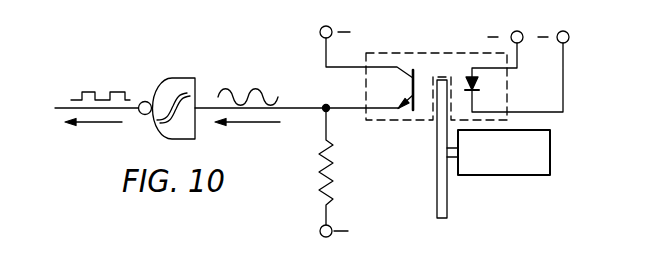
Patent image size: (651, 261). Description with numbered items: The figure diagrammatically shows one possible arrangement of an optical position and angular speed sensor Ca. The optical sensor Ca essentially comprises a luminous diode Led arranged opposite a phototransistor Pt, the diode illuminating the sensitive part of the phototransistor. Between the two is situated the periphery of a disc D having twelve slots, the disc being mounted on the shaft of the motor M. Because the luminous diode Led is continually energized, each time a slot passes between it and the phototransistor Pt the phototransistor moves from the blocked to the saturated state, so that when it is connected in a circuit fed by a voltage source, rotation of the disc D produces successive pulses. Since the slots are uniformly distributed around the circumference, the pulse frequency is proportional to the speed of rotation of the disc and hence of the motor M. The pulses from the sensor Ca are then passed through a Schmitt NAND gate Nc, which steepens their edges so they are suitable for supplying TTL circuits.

The Schmitt NAND gate Nc is at (173, 85).
The optical sensor Ca is at (390, 60).
The phototransistor Pt is at (392, 90).
The luminous diode Led is at (488, 86).
The disc D is at (437, 190).
The motor M is at (512, 161).